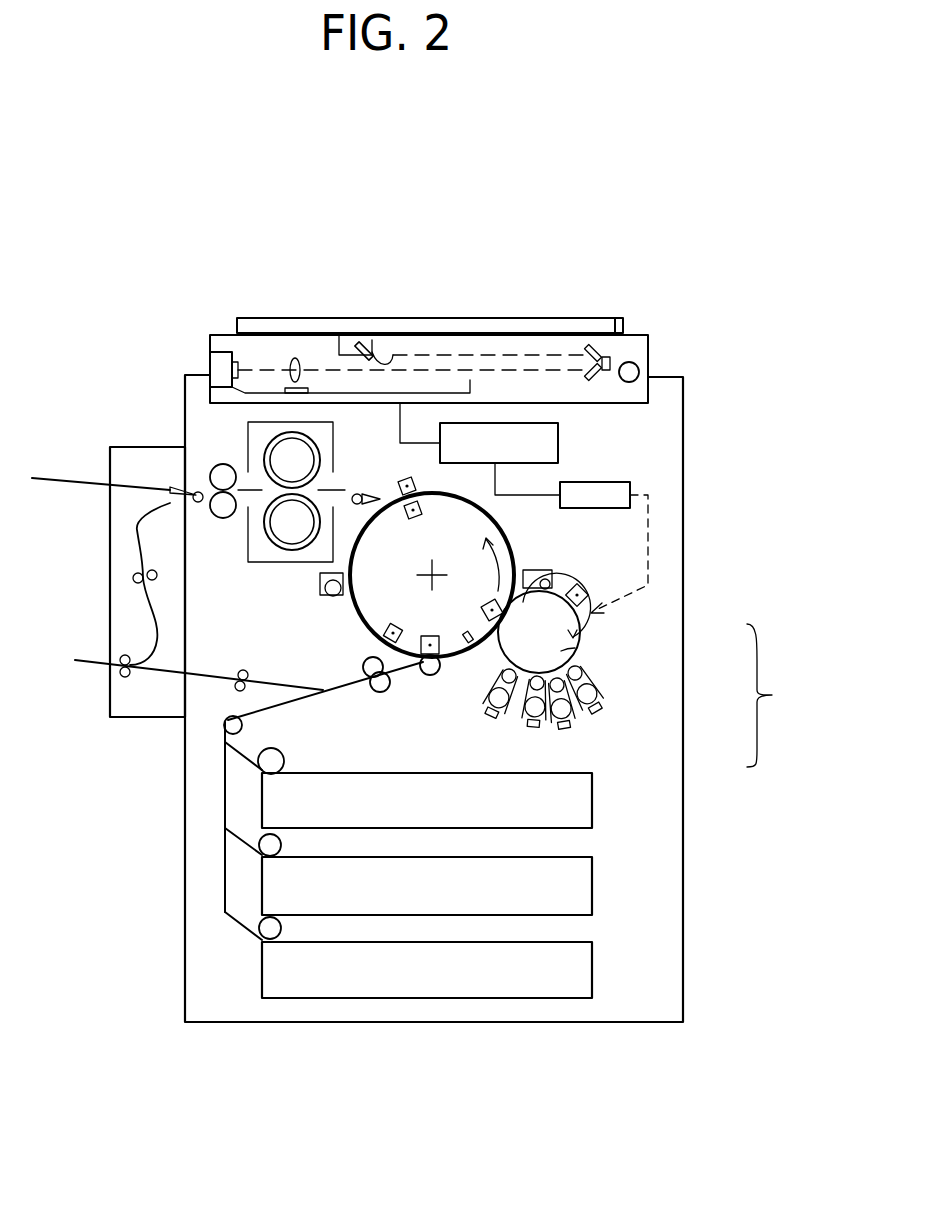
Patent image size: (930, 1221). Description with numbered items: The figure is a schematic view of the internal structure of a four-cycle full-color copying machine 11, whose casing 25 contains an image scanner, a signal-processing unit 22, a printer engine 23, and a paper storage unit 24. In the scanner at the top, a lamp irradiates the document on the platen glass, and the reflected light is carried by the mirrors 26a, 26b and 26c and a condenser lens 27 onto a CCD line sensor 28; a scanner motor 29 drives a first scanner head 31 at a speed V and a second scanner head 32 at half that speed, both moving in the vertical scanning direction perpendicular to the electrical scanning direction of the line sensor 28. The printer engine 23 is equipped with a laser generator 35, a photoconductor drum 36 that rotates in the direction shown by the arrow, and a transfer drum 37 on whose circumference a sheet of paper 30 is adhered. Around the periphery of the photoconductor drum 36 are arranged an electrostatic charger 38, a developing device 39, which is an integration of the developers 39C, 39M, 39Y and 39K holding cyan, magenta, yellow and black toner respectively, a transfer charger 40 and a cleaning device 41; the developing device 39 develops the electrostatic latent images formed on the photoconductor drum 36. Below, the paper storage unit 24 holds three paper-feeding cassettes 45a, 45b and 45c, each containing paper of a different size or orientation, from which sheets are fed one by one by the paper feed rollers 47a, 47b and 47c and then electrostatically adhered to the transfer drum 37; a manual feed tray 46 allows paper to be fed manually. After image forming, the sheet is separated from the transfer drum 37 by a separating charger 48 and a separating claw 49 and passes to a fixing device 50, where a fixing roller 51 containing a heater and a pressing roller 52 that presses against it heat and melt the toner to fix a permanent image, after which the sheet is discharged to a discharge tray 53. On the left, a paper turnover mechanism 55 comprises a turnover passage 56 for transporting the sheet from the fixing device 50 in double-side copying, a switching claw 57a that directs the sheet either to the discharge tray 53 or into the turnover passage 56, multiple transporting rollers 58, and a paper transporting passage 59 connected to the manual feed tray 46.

The copying machine 11 is at (668, 289).
The signal-processing unit 22 is at (560, 446).
The printer engine 23 is at (660, 604).
The paper storage unit 24 is at (658, 843).
The casing 25 is at (683, 887).
The mirror 26a is at (393, 352).
The mirror 26b is at (591, 346).
The mirror 26c is at (588, 374).
The condenser lens 27 is at (295, 358).
The line sensor 28 is at (222, 352).
The scanner motor 29 is at (640, 372).
The sheet of paper 30 is at (433, 487).
The first scanner head 31 is at (349, 336).
The second scanner head 32 is at (617, 336).
The laser generator 35 is at (632, 488).
The photoconductor drum 36 is at (560, 651).
The transfer drum 37 is at (468, 520).
The electrostatic charger 38 is at (584, 585).
The developing device 39 is at (774, 695).
The developing device 39C is at (600, 699).
The developing device 39M is at (573, 723).
The developing device 39Y is at (545, 726).
The developing device 39K is at (503, 716).
The transfer charger 40 is at (483, 605).
The cleaning device 41 is at (548, 570).
The paper-feeding cassette 45a is at (591, 790).
The paper-feeding cassette 45b is at (591, 872).
The paper-feeding cassette 45c is at (591, 957).
The manual feed tray 46 is at (97, 665).
The paper feed roller 47a is at (285, 750).
The paper feed roller 47b is at (280, 848).
The paper feed roller 47c is at (280, 933).
The separating charger 48 is at (405, 482).
The separating claw 49 is at (360, 495).
The fixing device 50 is at (338, 446).
The fixing roller 51 is at (278, 452).
The pressing roller 52 is at (287, 531).
The discharge tray 53 is at (52, 478).
The paper turnover mechanism 55 is at (106, 571).
The turnover passage 56 is at (140, 528).
The path switching gate 57a is at (190, 492).
The transporting roller 58 is at (158, 580).
The paper transporting passage 59 is at (195, 672).